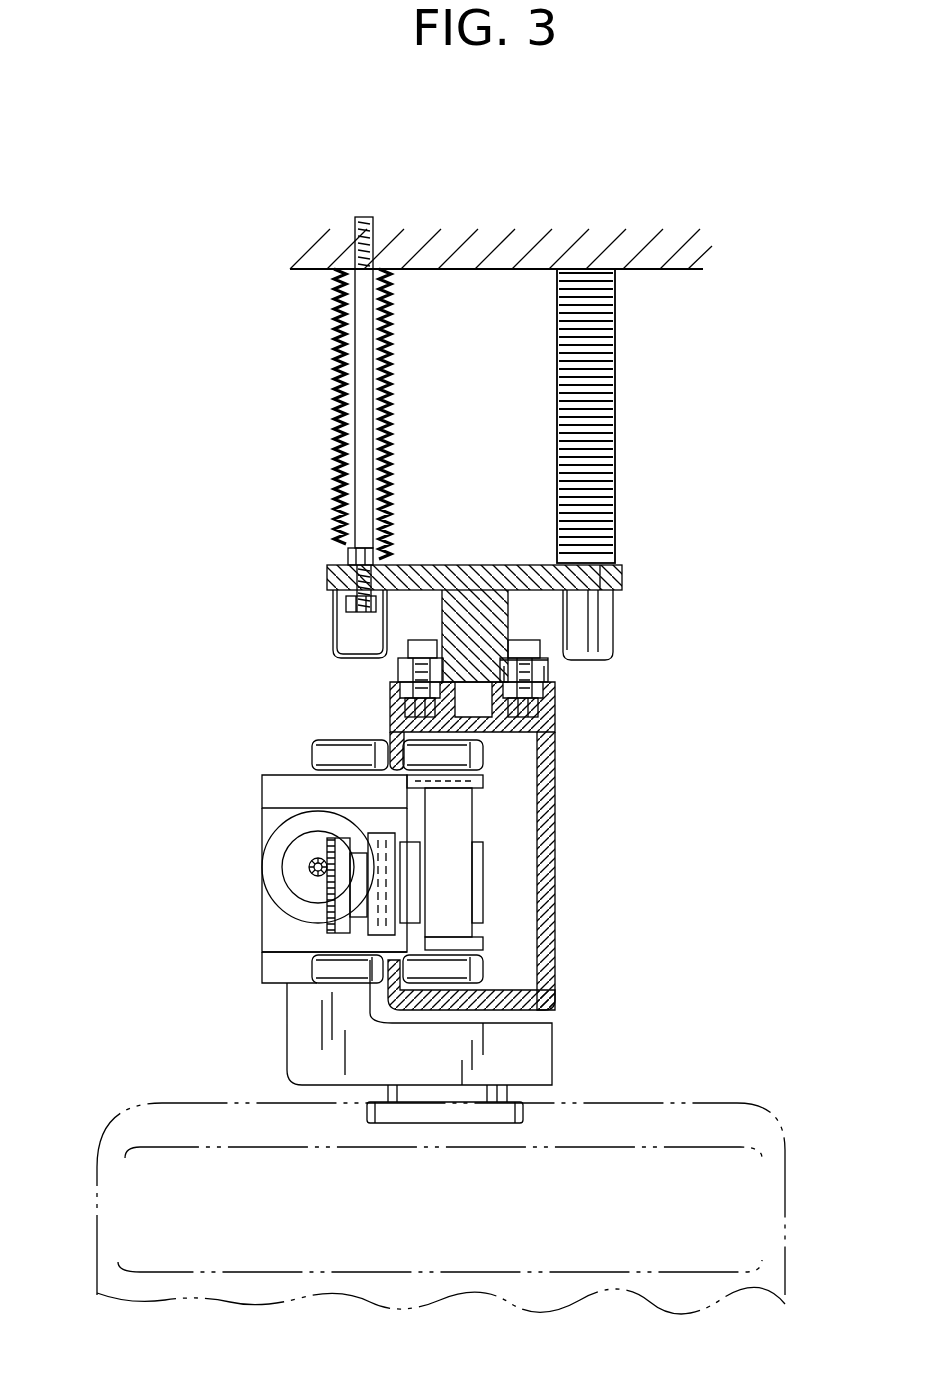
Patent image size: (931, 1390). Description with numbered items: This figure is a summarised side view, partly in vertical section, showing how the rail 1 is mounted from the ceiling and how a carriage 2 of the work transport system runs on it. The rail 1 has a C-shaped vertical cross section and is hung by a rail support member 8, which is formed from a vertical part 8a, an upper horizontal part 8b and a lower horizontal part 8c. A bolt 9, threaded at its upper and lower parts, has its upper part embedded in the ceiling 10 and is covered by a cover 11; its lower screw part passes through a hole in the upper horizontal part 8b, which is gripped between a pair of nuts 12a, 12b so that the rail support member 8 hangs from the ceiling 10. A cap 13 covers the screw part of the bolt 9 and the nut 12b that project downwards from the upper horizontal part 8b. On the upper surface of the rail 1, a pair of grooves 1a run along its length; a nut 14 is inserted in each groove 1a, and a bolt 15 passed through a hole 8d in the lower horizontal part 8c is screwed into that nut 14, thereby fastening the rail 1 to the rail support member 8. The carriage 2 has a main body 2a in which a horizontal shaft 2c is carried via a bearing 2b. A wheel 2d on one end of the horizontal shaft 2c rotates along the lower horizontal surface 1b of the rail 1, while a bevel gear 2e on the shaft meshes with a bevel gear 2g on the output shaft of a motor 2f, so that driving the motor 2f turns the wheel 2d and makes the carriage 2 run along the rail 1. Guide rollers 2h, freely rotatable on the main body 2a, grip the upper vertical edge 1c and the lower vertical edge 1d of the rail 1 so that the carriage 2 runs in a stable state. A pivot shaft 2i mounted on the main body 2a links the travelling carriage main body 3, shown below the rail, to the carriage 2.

The rail 1 is at (439, 947).
The grooves 1a is at (400, 722).
The lower horizontal surface 1b is at (513, 987).
The upper vertical edge 1c is at (397, 748).
The lower vertical edge 1d is at (392, 1013).
The carriage 2 is at (376, 984).
The main body 2a is at (270, 970).
The bearing 2b is at (480, 827).
The horizontal shaft 2c is at (485, 880).
The wheel 2d is at (442, 912).
The bevel gear 2e is at (323, 910).
The motor 2f is at (283, 835).
The bevel gear 2g is at (313, 865).
The guide rollers 2h is at (312, 750).
The pivot shaft 2i is at (480, 1107).
The travelling carriage main body 3 is at (655, 1102).
The rail support member 8 is at (457, 556).
The vertical part 8a is at (475, 600).
The upper horizontal part 8b is at (623, 578).
The lower horizontal part 8c is at (547, 683).
The holes 8d is at (403, 675).
The bolt 9 is at (363, 368).
The ceiling 10 is at (688, 269).
The cover 11 is at (333, 300).
The nut 12a is at (362, 547).
The nut 12b is at (347, 607).
The cap 13 is at (332, 637).
The nut 14 is at (412, 700).
The bolt 15 is at (423, 640).